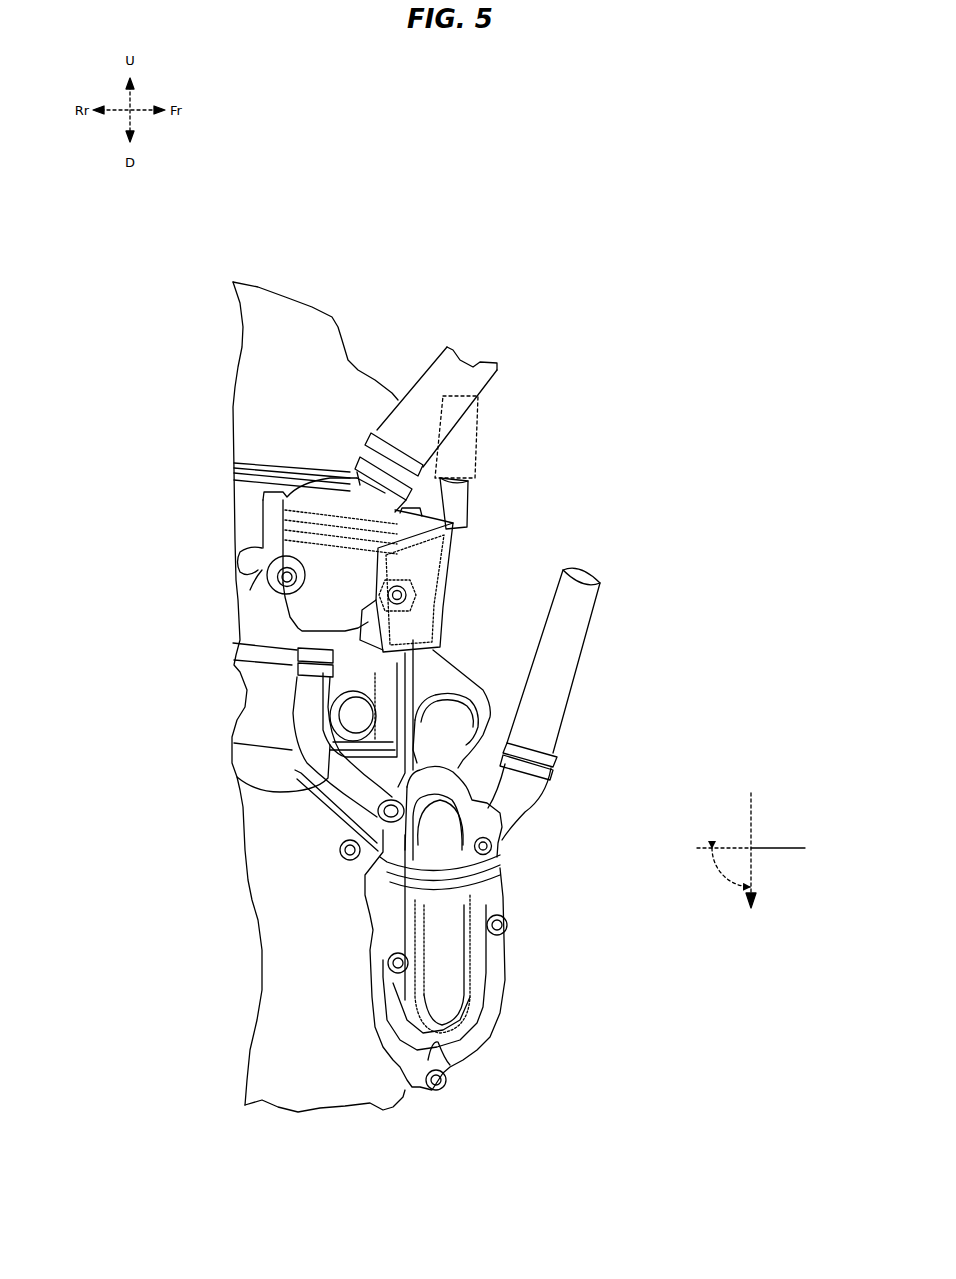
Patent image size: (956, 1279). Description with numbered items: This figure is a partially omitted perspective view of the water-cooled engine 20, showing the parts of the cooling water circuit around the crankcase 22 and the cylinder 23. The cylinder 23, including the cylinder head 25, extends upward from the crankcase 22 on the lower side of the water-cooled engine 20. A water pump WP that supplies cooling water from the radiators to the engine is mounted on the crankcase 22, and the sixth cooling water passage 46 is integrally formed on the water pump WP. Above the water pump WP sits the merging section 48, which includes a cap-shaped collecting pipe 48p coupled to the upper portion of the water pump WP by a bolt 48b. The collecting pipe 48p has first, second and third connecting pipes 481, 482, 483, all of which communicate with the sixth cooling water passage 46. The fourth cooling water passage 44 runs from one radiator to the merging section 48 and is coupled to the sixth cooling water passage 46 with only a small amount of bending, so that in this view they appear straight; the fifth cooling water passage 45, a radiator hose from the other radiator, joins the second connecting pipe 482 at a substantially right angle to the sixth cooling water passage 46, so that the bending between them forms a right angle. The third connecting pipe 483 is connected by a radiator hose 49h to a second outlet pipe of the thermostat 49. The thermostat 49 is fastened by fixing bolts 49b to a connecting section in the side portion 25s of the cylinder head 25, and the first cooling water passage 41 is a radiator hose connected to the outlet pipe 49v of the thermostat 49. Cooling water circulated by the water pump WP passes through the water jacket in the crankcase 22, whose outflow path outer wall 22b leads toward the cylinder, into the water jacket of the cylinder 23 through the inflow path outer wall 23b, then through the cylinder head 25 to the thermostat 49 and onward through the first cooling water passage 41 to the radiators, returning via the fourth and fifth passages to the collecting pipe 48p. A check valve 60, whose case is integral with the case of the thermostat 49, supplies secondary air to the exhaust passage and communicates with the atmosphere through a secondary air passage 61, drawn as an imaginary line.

The water-cooled engine 20 is at (289, 292).
The crankcase 22 is at (237, 860).
The outflow path outer wall 22b is at (375, 762).
The cylinder 23 is at (240, 668).
The inflow path outer wall 23b is at (360, 705).
The cylinder head 25 is at (240, 620).
The side portion of the cylinder head 25s is at (250, 590).
The first cooling water passage 41 is at (472, 362).
The fourth cooling water passage 44 is at (458, 677).
The fifth cooling water passage 45 is at (583, 633).
The sixth cooling water passage 46 is at (457, 961).
The merging section 48 is at (458, 833).
The first connecting pipe 481 is at (447, 785).
The second connecting pipe 482 is at (487, 822).
The third connecting pipe 483 is at (375, 832).
The bolt 48b is at (493, 847).
The collecting pipe 48p is at (500, 862).
The thermostat 49 is at (253, 516).
The fixing bolts 49b is at (283, 573).
The radiator hose 49h is at (305, 733).
The outlet pipe 49v is at (352, 472).
The check valve 60 is at (449, 609).
The secondary air passage 61 is at (481, 437).
The water pump WP is at (477, 1000).